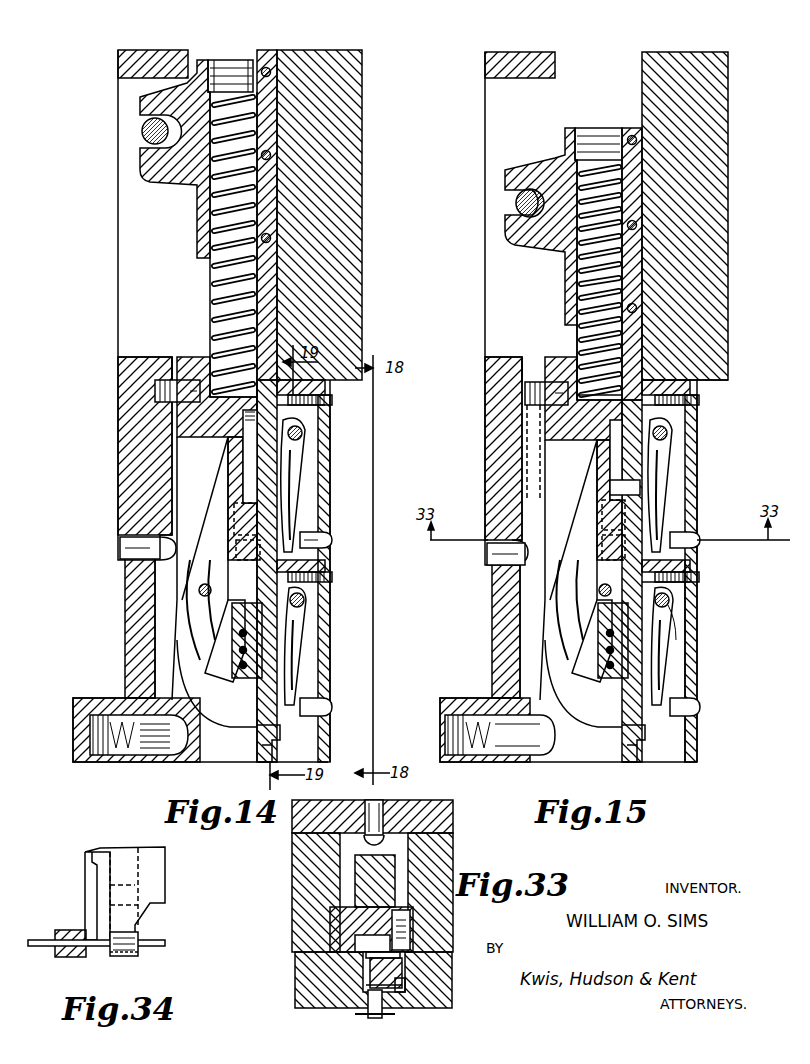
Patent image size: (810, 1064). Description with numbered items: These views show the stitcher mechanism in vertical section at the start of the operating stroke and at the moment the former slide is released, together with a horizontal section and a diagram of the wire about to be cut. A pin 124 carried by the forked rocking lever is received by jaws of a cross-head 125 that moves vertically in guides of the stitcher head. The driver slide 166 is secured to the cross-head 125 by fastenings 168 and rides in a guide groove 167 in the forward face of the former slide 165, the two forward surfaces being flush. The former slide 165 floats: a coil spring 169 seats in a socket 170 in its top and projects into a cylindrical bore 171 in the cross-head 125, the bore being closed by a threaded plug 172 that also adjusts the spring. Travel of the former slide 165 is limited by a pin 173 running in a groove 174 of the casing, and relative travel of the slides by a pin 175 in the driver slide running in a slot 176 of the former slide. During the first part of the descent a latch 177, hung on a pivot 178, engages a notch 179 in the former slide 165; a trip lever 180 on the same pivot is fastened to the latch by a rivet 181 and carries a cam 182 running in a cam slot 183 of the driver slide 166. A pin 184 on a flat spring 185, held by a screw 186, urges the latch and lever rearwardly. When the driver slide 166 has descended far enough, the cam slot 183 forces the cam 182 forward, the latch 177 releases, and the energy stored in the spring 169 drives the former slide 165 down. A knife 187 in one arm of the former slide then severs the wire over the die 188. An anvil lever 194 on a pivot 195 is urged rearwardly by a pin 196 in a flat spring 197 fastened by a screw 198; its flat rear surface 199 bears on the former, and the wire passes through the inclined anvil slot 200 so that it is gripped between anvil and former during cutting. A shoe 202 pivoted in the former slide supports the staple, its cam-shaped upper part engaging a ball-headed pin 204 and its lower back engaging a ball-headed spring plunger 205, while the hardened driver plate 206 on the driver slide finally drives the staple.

In FIG. 14, the pin 124 is at (142, 131).
In FIG. 15, the pin 124 is at (516, 206).
In FIG. 14, the cross-head 125 is at (152, 178).
In FIG. 15, the cross-head 125 is at (552, 250).
In FIG. 14, the former slide 165 is at (232, 448).
In FIG. 15, the former slide 165 is at (598, 445).
In FIG. 33, the former slide 165 is at (330, 920).
In FIG. 34, the former slide 165 is at (158, 890).
In FIG. 14, the driver slide 166 is at (326, 412).
In FIG. 15, the driver slide 166 is at (692, 412).
In FIG. 33, the driver slide 166 is at (355, 945).
In FIG. 33, the guide groove 167 is at (400, 920).
In FIG. 14, the fastenings 168 is at (268, 68).
In FIG. 15, the fastenings 168 is at (637, 140).
In FIG. 15, the coil spring 169 is at (578, 332).
In FIG. 15, the socket 170 is at (584, 356).
In FIG. 14, the cylindrical bore 171 is at (233, 244).
In FIG. 15, the cylindrical bore 171 is at (580, 278).
In FIG. 14, the threaded plug 172 is at (243, 59).
In FIG. 15, the threaded plug 172 is at (608, 128).
In FIG. 15, the pin 173 is at (535, 380).
In FIG. 15, the groove 174 is at (528, 440).
In FIG. 15, the pin 175 is at (630, 490).
In FIG. 15, the slot 176 is at (655, 395).
In FIG. 15, the latch 177 is at (692, 568).
In FIG. 33, the latch 177 is at (405, 975).
In FIG. 15, the pivot 178 is at (668, 435).
In FIG. 15, the notch 179 is at (692, 588).
In FIG. 33, the notch 179 is at (400, 948).
In FIG. 14, the trip lever 180 is at (300, 470).
In FIG. 15, the trip lever 180 is at (668, 478).
In FIG. 33, the trip lever 180 is at (370, 985).
In FIG. 33, the rivet 181 is at (408, 995).
In FIG. 14, the cam 182 is at (252, 500).
In FIG. 15, the cam 182 is at (635, 515).
In FIG. 33, the cam 182 is at (372, 970).
In FIG. 14, the cam slot 183 is at (288, 455).
In FIG. 15, the cam slot 183 is at (671, 600).
In FIG. 33, the cam slot 183 is at (366, 957).
In FIG. 14, the pin 184 is at (332, 540).
In FIG. 15, the pin 184 is at (702, 545).
In FIG. 14, the flat spring 185 is at (270, 520).
In FIG. 15, the flat spring 185 is at (648, 540).
In FIG. 33, the flat spring 185 is at (360, 1014).
In FIG. 14, the screw 186 is at (332, 400).
In FIG. 15, the screw 186 is at (699, 400).
In FIG. 34, the knife 187 is at (86, 885).
In FIG. 34, the die 188 is at (65, 958).
In FIG. 14, the anvil lever 194 is at (300, 640).
In FIG. 15, the anvil lever 194 is at (668, 650).
In FIG. 34, the anvil lever 194 is at (115, 957).
In FIG. 15, the pivot 195 is at (678, 625).
In FIG. 15, the pin 196 is at (690, 716).
In FIG. 15, the flat spring 197 is at (695, 675).
In FIG. 15, the screw 198 is at (700, 580).
In FIG. 14, the flat rear surface 199 is at (305, 700).
In FIG. 14, the anvil slot 200 is at (268, 743).
In FIG. 15, the anvil slot 200 is at (620, 750).
In FIG. 34, the anvil slot 200 is at (140, 952).
In FIG. 14, the shoe 202 is at (238, 600).
In FIG. 15, the shoe 202 is at (586, 583).
In FIG. 33, the shoe 202 is at (355, 880).
In FIG. 14, the ball-headed pin 204 is at (122, 585).
In FIG. 15, the ball-headed pin 204 is at (568, 559).
In FIG. 33, the ball-headed pin 204 is at (384, 800).
In FIG. 14, the ball-headed spring plunger 205 is at (182, 757).
In FIG. 14, the driver plate 206 is at (262, 668).